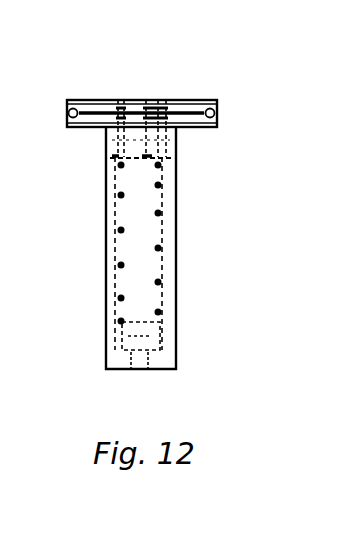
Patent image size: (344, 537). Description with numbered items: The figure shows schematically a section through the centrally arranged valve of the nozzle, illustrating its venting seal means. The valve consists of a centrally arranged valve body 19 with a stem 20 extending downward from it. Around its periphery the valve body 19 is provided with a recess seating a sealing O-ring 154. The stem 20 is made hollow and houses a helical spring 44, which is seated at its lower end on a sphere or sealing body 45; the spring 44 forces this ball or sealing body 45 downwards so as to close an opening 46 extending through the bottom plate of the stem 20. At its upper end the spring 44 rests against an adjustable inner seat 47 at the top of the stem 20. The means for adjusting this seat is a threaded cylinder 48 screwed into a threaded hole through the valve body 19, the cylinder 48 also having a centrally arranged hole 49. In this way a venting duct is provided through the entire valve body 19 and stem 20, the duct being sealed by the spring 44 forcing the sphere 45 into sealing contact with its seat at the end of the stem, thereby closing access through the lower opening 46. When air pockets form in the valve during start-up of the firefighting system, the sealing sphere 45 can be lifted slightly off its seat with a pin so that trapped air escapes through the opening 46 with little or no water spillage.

The valve body 19 is at (185, 99).
The sealing O-ring 154 is at (217, 113).
The stem 20 is at (176, 251).
The threaded cylinder 48 is at (118, 99).
The centrally arranged hole 49 is at (143, 99).
The adjustable inner seat 47 is at (105, 167).
The helical spring 44 is at (158, 213).
The sealing body 45 is at (135, 333).
The opening 46 is at (137, 362).